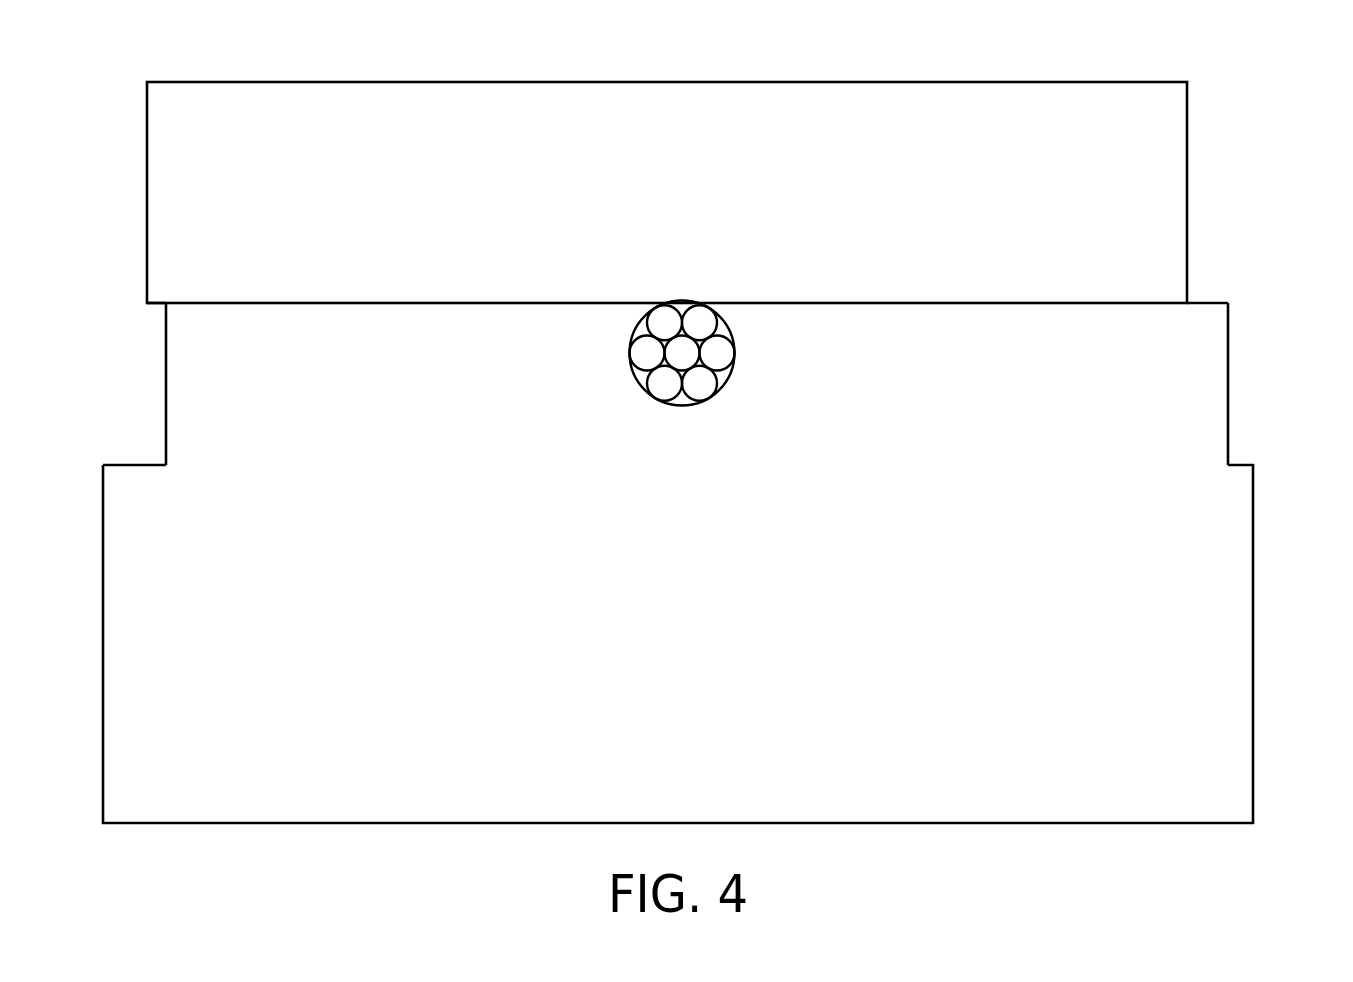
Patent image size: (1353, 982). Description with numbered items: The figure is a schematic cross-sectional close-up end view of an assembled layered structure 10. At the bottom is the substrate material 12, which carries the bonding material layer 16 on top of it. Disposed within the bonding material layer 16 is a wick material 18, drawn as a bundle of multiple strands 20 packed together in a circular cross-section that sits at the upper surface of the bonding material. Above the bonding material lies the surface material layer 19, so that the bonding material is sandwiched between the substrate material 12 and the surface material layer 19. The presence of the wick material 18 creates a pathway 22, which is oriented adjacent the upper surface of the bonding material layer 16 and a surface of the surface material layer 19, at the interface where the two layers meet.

The layered structure 10 is at (998, 55).
The substrate material 12 is at (1237, 622).
The bonding material layer 16 is at (1218, 377).
The wick material 18 is at (727, 327).
The surface material layer 19 is at (367, 105).
The strands 20 is at (660, 320).
The pathway 22 is at (733, 335).